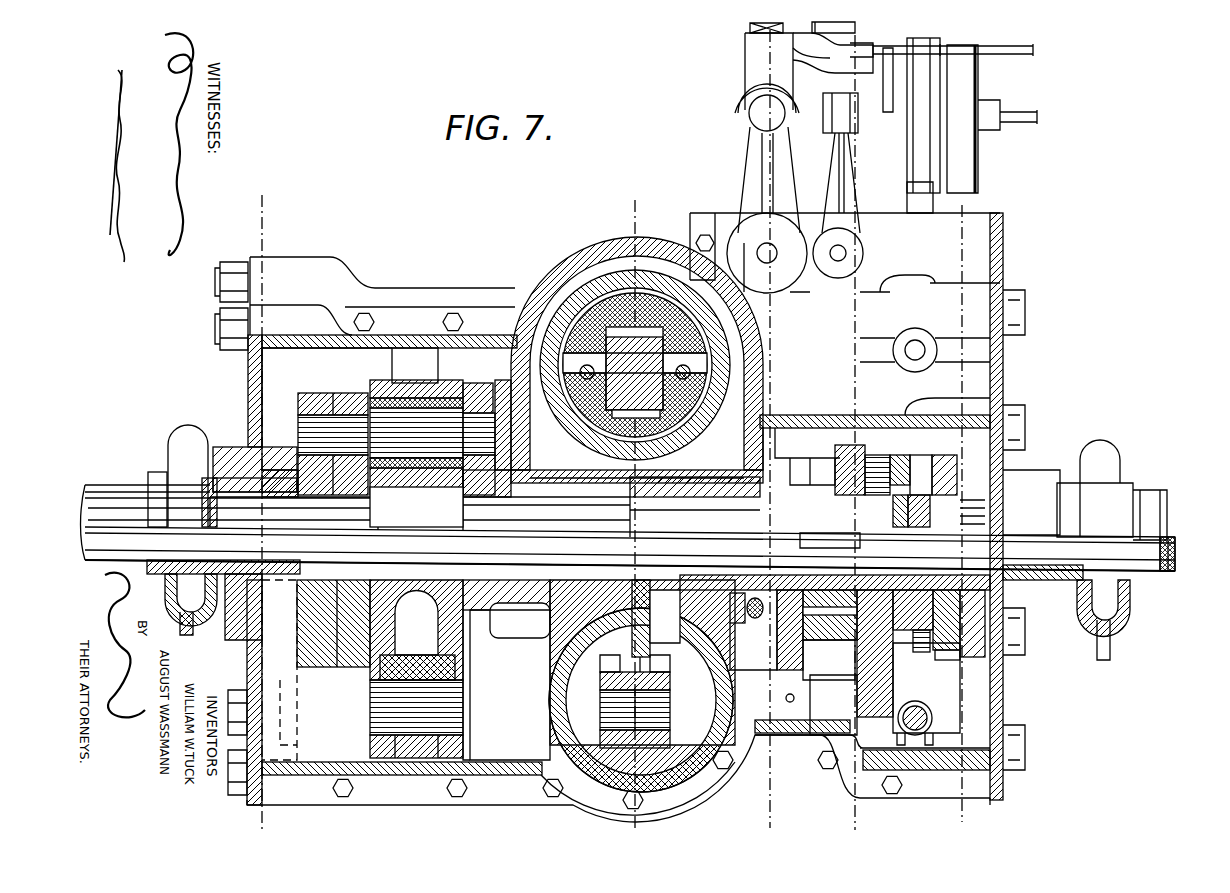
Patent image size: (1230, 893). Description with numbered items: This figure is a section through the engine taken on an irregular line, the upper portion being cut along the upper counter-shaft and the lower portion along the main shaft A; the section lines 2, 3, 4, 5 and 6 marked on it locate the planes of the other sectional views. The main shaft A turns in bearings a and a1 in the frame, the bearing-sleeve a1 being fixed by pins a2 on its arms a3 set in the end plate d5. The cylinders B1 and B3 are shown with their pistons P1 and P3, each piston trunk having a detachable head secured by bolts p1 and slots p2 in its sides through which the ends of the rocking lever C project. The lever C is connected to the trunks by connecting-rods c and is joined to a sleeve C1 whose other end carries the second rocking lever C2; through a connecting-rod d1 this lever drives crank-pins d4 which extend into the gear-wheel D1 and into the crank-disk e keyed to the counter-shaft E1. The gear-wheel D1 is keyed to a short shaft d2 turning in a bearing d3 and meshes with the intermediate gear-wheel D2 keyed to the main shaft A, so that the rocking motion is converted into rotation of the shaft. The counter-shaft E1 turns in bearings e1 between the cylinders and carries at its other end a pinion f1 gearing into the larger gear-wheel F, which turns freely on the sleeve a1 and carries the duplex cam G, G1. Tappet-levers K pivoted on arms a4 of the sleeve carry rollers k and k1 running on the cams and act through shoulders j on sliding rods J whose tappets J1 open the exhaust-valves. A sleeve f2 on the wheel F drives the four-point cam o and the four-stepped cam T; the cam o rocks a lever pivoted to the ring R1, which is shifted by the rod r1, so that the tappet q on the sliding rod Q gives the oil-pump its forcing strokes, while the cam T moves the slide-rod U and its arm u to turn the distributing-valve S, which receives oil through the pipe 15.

The section line 2 2 is at (275, 824).
The section line 3 3 is at (632, 508).
The section line 4 4 is at (949, 824).
The section line 5 5 is at (845, 830).
The section line 6 6 is at (775, 809).
The pipe 15 is at (961, 87).
The main shaft A is at (628, 528).
The bearing a is at (247, 568).
The bearing-sleeve a1 is at (1042, 583).
The pins a2 is at (1010, 528).
The arms a3 is at (972, 516).
The arms a4 is at (944, 574).
The cylinder B1 is at (566, 413).
The cylinder B3 is at (556, 707).
The rocking lever C is at (617, 626).
The connecting-rods c is at (600, 684).
The sleeve C1 is at (502, 632).
The second rocking lever C2 is at (470, 663).
The gear-wheel D1 is at (300, 402).
The intermediate gear-wheel D2 is at (300, 637).
The connecting-rod d1 is at (415, 365).
The short shaft d2 is at (294, 513).
The bearing d3 is at (245, 465).
The crank-pin d4 is at (292, 392).
The end plate d5 is at (1010, 506).
The crank-disk e is at (480, 390).
The bearing e1 is at (708, 480).
The counter-shaft E1 is at (611, 512).
The intermediate gear-wheel F is at (862, 697).
The pinion f1 is at (846, 470).
The sleeve f2 is at (830, 544).
The cam G is at (913, 610).
The cam G1 is at (911, 513).
The sliding rod J is at (920, 350).
The tappet J1 is at (965, 730).
The shoulders j is at (932, 723).
The tappet-lever K is at (939, 661).
The antifriction-roller k is at (920, 652).
The antifriction-roller k1 is at (905, 462).
The four-point cam o is at (800, 675).
The piston P1 is at (636, 365).
The bolts p1 is at (690, 374).
The slots p2 is at (670, 640).
The piston P3 is at (697, 692).
The sliding rod Q is at (790, 264).
The tappet q is at (769, 180).
The ring R1 is at (753, 630).
The rod r1 is at (759, 616).
The distributing-valve S is at (930, 125).
The four-stepped cam T is at (817, 635).
The slide-rod U is at (846, 256).
The arm u is at (844, 163).